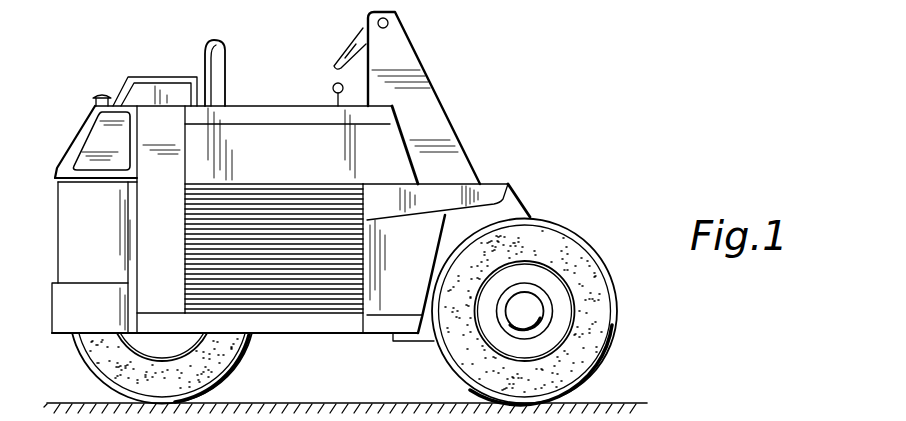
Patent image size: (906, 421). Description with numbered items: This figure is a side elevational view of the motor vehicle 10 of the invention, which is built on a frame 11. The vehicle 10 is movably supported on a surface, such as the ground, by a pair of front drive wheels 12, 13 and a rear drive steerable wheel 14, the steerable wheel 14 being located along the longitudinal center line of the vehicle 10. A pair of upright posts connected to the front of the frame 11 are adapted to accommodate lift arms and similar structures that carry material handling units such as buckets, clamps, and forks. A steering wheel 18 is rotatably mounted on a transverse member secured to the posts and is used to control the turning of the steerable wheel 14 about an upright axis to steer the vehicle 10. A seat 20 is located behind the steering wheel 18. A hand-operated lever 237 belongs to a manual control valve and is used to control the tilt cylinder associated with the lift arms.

The motor vehicle 10 is at (135, 68).
The frame 11 is at (303, 332).
The front drive wheel 12 is at (802, 420).
The front drive wheel 13 is at (608, 303).
The rear drive steerable wheel 14 is at (226, 366).
The steering wheel 18 is at (359, 33).
The seat 20 is at (227, 50).
The hand-operated lever 237 is at (333, 88).